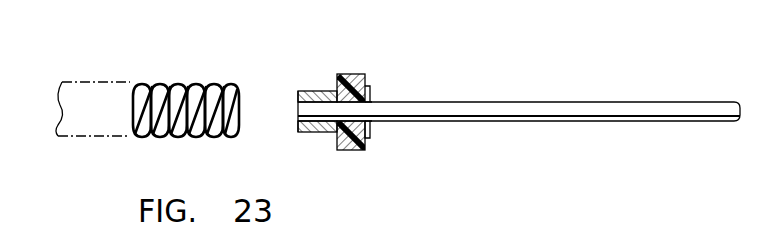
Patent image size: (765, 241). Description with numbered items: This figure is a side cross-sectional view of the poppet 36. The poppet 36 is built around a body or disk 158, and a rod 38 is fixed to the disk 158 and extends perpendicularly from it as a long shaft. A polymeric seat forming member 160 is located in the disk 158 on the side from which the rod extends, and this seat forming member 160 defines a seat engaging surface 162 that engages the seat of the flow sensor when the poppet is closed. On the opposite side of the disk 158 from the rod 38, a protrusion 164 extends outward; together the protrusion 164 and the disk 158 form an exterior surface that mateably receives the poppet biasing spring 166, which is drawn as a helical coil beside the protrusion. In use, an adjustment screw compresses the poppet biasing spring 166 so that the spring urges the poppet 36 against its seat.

The poppet 36 is at (397, 145).
The rod 38 is at (598, 103).
The disk 158 is at (340, 72).
The seat forming member 160 is at (369, 86).
The seat engaging surface 162 is at (368, 101).
The protrusion 164 is at (314, 90).
The poppet biasing spring 166 is at (172, 82).